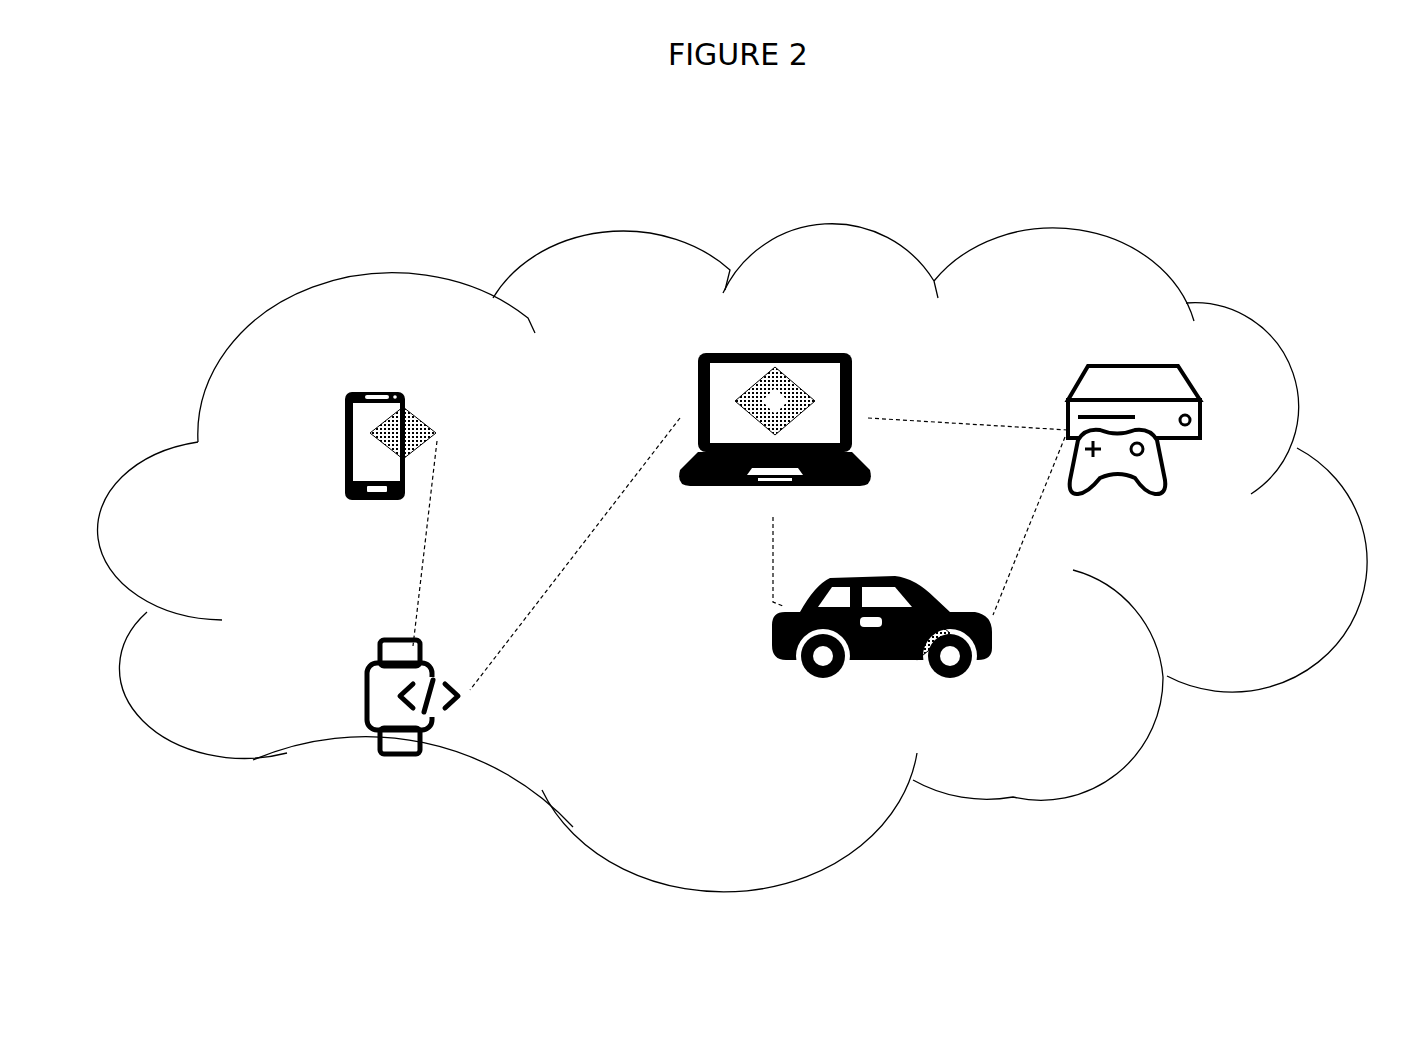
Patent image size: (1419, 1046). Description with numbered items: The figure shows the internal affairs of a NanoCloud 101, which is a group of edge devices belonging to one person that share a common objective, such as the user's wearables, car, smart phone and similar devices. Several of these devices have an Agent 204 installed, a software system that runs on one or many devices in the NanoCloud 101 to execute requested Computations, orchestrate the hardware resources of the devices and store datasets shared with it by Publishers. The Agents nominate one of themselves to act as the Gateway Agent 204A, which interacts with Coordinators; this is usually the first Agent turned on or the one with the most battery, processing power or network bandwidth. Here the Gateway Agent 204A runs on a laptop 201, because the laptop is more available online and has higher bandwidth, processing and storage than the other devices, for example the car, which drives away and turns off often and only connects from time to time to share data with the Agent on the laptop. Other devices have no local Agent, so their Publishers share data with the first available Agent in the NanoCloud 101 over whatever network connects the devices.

The NanoCloud 101 is at (1311, 609).
The device with Gateway Agent 201 is at (770, 350).
The Agent 204 is at (428, 412).
The Gateway Agent 204A is at (797, 378).